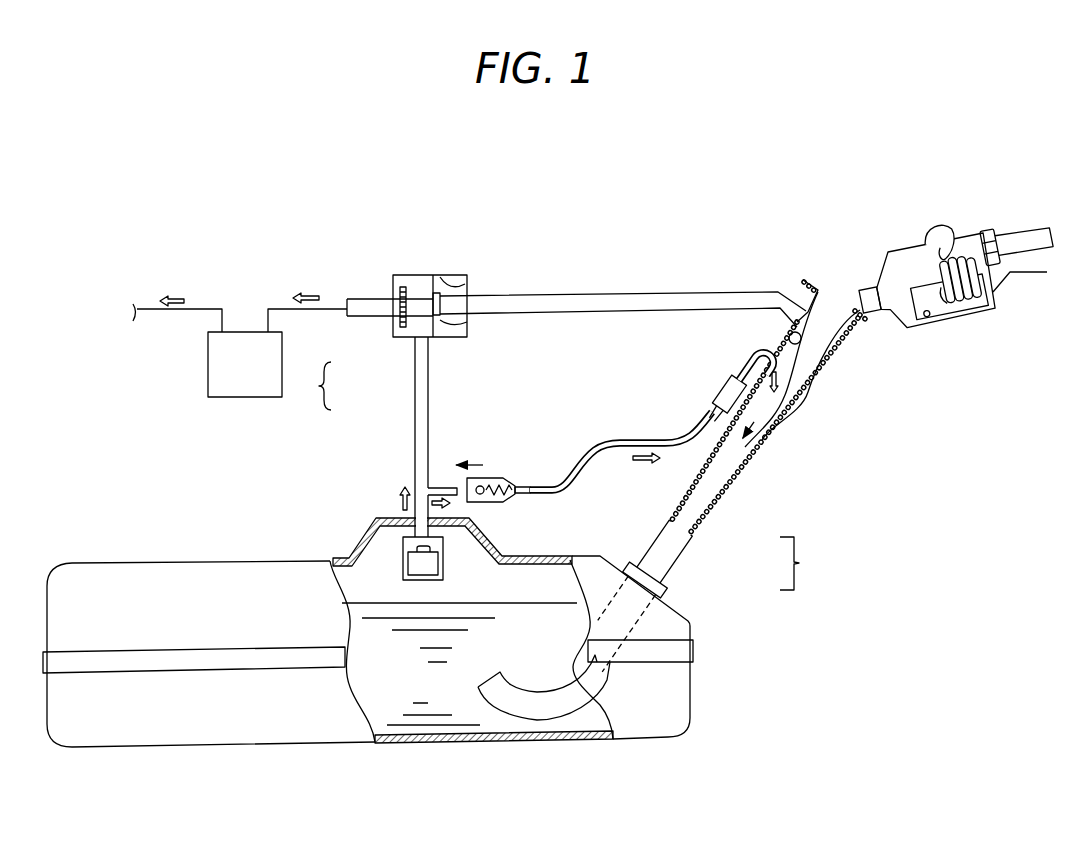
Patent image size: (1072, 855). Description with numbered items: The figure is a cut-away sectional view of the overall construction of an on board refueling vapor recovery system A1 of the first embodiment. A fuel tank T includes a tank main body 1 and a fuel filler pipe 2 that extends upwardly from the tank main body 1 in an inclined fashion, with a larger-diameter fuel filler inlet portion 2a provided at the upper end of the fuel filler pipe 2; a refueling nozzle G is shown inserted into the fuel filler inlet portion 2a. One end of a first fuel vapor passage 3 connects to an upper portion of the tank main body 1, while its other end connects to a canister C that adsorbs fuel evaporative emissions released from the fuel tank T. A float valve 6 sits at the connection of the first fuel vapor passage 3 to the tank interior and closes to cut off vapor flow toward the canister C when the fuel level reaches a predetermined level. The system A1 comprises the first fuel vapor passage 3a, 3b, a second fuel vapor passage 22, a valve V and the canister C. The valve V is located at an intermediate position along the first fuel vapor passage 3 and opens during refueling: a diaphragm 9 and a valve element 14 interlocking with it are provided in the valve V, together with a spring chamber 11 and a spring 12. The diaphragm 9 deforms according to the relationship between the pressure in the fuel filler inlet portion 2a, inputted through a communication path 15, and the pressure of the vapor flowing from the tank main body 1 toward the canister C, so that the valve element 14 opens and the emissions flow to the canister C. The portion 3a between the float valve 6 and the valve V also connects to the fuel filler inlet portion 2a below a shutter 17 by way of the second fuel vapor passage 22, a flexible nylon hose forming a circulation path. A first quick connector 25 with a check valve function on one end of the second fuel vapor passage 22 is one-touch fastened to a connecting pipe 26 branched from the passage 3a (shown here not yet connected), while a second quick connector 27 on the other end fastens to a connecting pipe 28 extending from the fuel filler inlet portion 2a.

The tank main body 1 is at (713, 582).
The fuel filler pipe 2 is at (683, 552).
The fuel filler inlet portion 2a is at (827, 362).
The first fuel vapor passage 3 is at (316, 386).
The first fuel vapor passage 3a is at (413, 372).
The first fuel vapor passage 3b is at (373, 317).
The float valve 6 is at (391, 546).
The diaphragm 9 is at (444, 279).
The spring chamber 11 is at (458, 327).
The spring 12 is at (464, 281).
The valve element 14 is at (405, 287).
The communication path 15 is at (590, 292).
The shutter 17 is at (782, 340).
The second fuel vapor passage 22 is at (640, 440).
The first quick connector 25 is at (492, 477).
The connecting pipe 26 is at (443, 480).
The second quick connector 27 is at (722, 378).
The connecting pipe 28 is at (760, 357).
The on board refueling vapor recovery system A1 is at (792, 463).
The canister C is at (244, 308).
The fuel gun nozzle G is at (899, 236).
The fuel tank T is at (799, 563).
The valve V is at (438, 259).